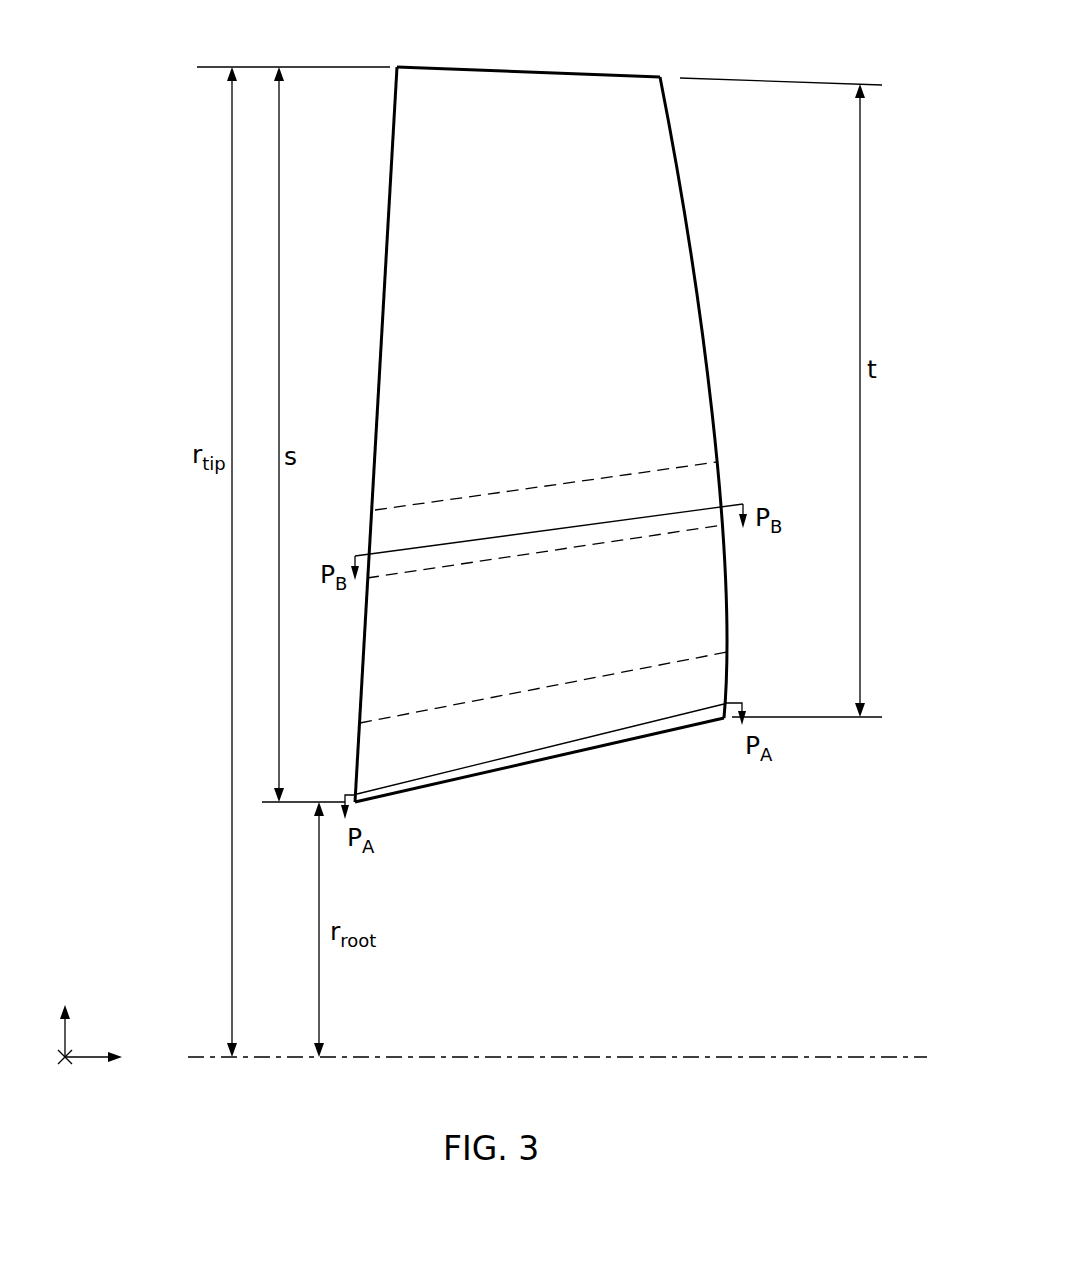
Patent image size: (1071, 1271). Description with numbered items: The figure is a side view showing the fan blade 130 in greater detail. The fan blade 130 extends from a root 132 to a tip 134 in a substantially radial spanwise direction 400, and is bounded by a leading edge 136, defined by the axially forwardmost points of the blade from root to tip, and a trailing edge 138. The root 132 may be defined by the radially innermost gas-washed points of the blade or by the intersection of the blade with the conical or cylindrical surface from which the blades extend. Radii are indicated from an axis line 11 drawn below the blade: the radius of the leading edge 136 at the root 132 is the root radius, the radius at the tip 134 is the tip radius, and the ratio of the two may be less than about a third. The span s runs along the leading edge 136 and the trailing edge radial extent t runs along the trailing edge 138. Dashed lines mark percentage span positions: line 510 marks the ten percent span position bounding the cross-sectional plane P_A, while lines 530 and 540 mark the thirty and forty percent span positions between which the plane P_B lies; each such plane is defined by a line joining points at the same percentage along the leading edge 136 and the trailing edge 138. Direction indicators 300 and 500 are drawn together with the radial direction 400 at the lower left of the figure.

The engine centerline axis 11 is at (878, 1058).
The fan blade 130 is at (565, 407).
The root 132 is at (697, 722).
The tip 134 is at (625, 73).
The leading edge 136 is at (388, 183).
The trailing edge 138 is at (723, 485).
The 10% span position line 510 is at (378, 723).
The 30% span position line 530 is at (398, 578).
The 40% span position line 540 is at (383, 512).
The axial direction 300 is at (119, 1058).
The radial spanwise direction 400 is at (69, 1017).
The circumferential direction 500 is at (71, 1074).